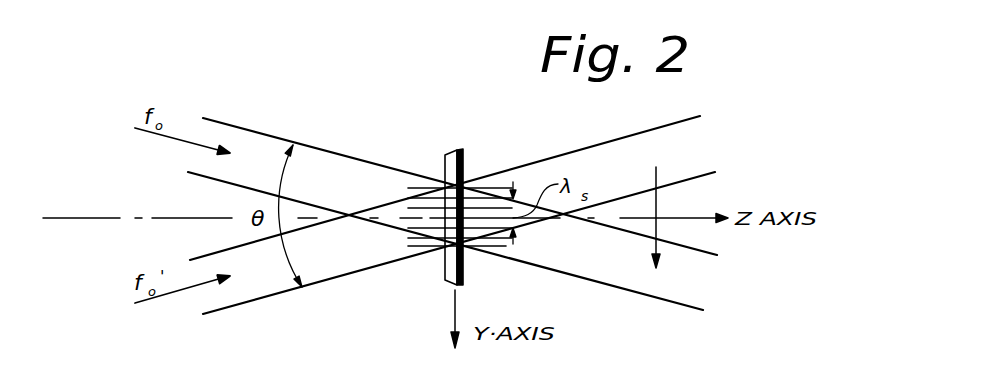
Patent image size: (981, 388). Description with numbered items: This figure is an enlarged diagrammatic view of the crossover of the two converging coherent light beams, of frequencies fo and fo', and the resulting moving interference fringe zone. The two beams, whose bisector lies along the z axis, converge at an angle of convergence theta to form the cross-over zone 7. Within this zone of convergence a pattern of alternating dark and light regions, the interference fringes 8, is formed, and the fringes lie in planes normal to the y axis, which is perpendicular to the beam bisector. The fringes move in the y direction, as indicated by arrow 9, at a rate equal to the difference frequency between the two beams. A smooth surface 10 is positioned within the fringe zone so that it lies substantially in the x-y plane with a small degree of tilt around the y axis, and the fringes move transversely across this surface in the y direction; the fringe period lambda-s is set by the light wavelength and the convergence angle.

The cross-over zone 7 is at (426, 186).
The interference fringes 8 is at (422, 215).
The arrow 9 is at (658, 175).
The smooth surface 10 is at (463, 159).